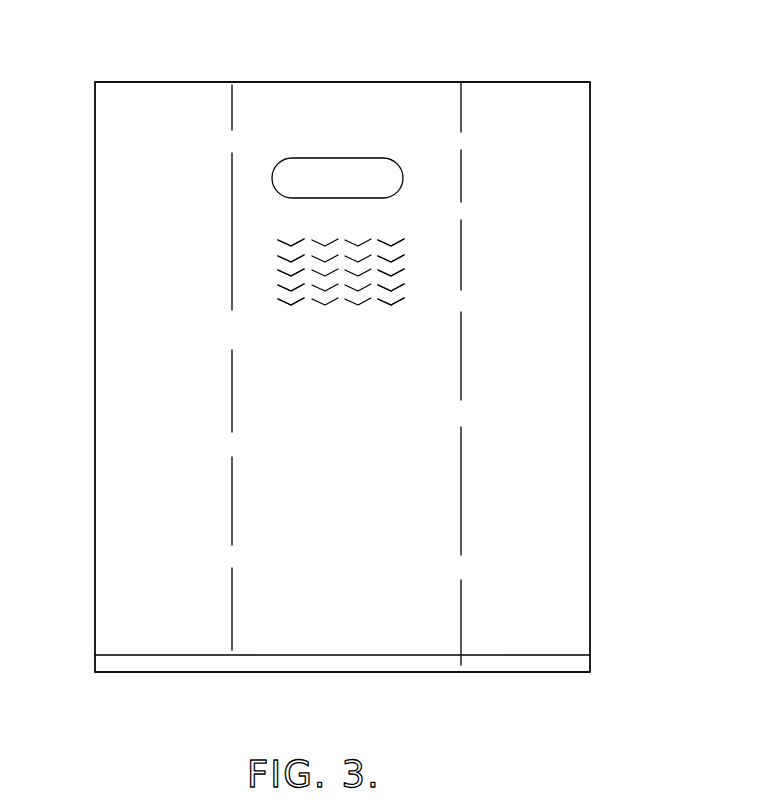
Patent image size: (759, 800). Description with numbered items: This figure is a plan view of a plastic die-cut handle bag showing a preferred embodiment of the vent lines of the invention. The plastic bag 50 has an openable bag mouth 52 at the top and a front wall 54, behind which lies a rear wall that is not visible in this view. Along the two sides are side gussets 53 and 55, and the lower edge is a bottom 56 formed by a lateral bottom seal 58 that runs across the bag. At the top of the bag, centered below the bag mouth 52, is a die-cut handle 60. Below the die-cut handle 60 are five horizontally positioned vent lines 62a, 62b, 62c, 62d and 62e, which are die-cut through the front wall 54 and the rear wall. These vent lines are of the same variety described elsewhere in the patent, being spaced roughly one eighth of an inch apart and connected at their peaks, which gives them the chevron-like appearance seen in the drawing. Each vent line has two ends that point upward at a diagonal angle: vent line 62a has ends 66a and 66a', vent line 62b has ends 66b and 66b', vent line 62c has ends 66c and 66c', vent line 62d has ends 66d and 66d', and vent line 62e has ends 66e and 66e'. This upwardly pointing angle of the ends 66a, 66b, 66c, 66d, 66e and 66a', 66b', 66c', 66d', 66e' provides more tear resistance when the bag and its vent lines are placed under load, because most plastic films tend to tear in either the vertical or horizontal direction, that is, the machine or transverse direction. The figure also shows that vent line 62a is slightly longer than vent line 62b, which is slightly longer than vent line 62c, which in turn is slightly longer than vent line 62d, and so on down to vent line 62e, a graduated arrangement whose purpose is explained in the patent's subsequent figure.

The plastic bag 50 is at (600, 467).
The openable bag mouth 52 is at (406, 81).
The side gusset 53 is at (137, 482).
The front wall 54 is at (375, 551).
The side gusset 55 is at (528, 390).
The bottom 56 is at (307, 673).
The lateral bottom seal 58 is at (375, 657).
The die-cut handle 60 is at (337, 157).
The vent line 62a is at (281, 243).
The vent line 62b is at (280, 260).
The vent line 62c is at (280, 275).
The vent line 62d is at (278, 290).
The vent line 62e is at (284, 301).
The end of vent line 66a is at (258, 142).
The end of vent line 66b is at (218, 225).
The end of vent line 66c is at (214, 266).
The end of vent line 66d is at (216, 313).
The end of vent line 66e is at (221, 351).
The end of vent line 66a' is at (528, 184).
The end of vent line 66b' is at (528, 207).
The end of vent line 66c' is at (527, 229).
The end of vent line 66d' is at (528, 252).
The end of vent line 66e' is at (528, 276).